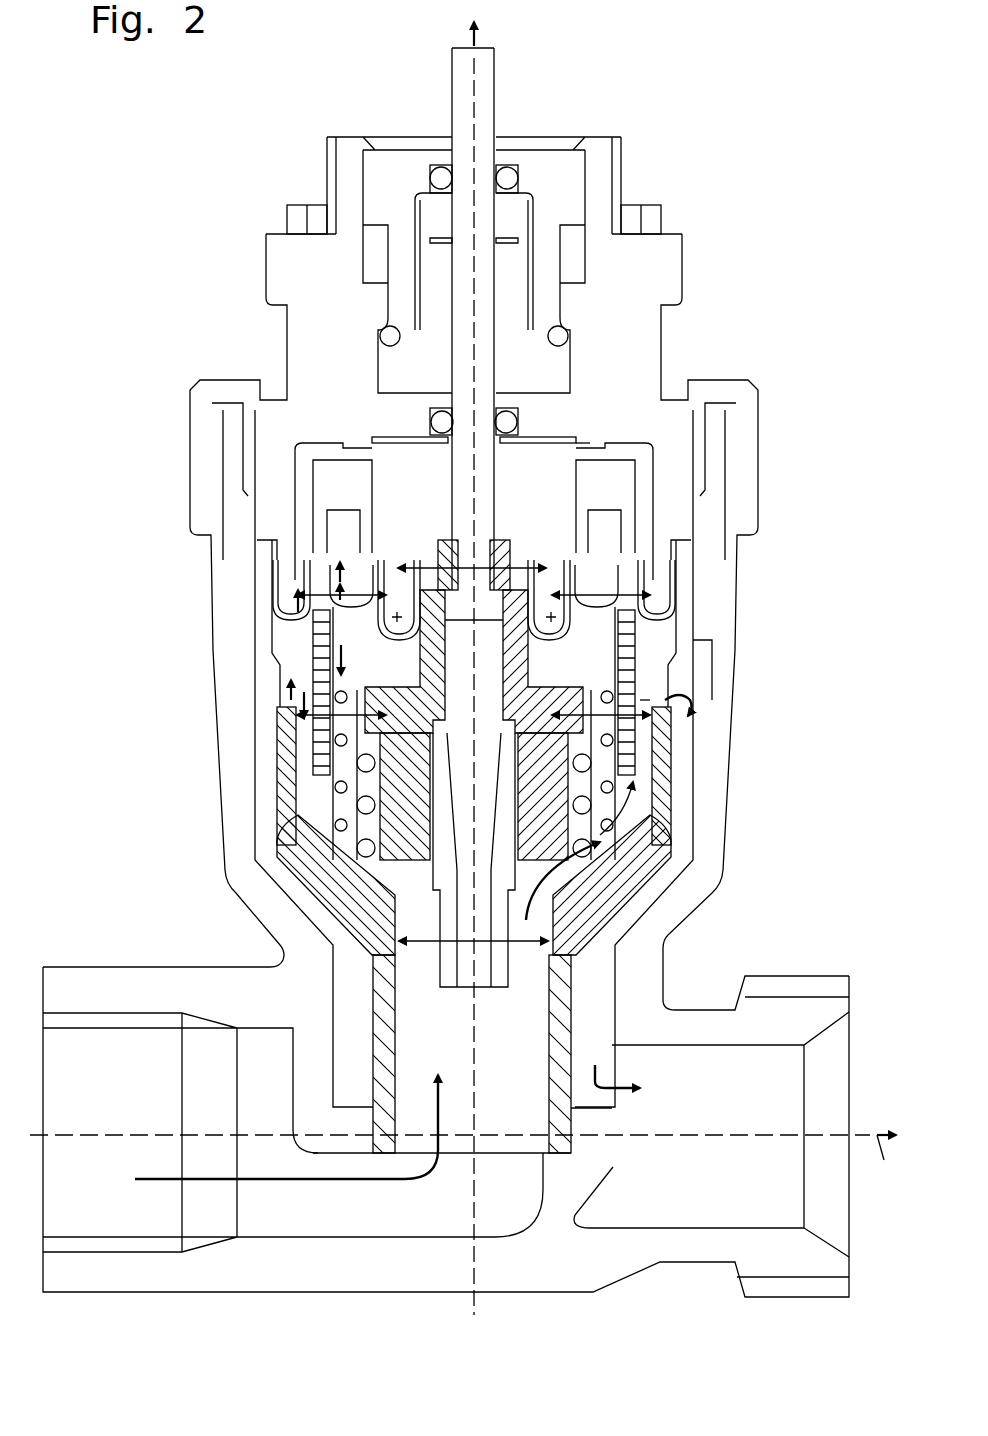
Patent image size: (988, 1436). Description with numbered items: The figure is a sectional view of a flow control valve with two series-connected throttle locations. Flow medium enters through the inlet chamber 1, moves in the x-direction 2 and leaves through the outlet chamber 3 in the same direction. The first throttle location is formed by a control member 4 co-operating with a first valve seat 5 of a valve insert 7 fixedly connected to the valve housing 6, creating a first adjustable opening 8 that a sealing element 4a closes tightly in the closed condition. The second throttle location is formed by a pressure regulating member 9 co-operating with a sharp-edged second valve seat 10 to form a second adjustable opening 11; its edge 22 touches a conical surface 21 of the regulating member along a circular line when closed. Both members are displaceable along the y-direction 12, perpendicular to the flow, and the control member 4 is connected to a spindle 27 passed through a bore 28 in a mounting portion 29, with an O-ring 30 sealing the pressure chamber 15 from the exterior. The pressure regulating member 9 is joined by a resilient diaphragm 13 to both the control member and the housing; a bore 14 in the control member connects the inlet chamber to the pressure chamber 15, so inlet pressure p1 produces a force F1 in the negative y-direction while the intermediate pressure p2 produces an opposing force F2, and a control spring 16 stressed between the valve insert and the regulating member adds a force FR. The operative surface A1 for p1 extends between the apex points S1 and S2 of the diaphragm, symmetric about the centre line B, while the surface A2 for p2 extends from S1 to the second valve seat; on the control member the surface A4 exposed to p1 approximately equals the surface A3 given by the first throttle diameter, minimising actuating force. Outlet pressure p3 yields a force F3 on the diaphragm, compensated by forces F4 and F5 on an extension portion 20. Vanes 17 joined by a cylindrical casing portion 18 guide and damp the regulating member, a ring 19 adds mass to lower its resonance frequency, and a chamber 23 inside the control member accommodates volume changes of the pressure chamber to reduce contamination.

The inlet chamber 1 is at (112, 1104).
The x-direction 2 is at (886, 1158).
The outlet chamber 3 is at (730, 1099).
The control member 4 is at (300, 792).
The sealing element 4a is at (305, 845).
The first valve seat 5 is at (300, 926).
The valve housing 6 is at (218, 647).
The valve insert 7 is at (322, 862).
The first adjustable opening 8 is at (378, 878).
The pressure regulating member 9 is at (272, 627).
The second valve seat 10 is at (283, 735).
The second adjustable opening 11 is at (273, 704).
The y-direction 12 is at (482, 36).
The resilient diaphragm 13 is at (714, 660).
The bore 14 is at (475, 953).
The pressure chamber 15 is at (420, 478).
The control spring 16 is at (585, 870).
The vanes 17 is at (612, 850).
The cylindrical casing portion 18 is at (642, 795).
The ring 19 is at (616, 488).
The extension portion 20 is at (636, 690).
The conical surface 21 is at (672, 700).
The edge 22 is at (660, 712).
The chamber 23 is at (465, 761).
The spindle 27 is at (487, 97).
The bore 28 is at (555, 440).
The mounting portion 29 is at (600, 455).
The O-ring 30 is at (505, 430).
The centre line B is at (472, 128).
The operative surface A1 is at (826, 543).
The operative surface A2 is at (826, 628).
The operative surface A3 is at (555, 945).
The operative surface A4 is at (700, 530).
The apex point S1 is at (655, 580).
The apex point S2 is at (690, 600).
The spring force FR is at (332, 566).
The force F1 is at (335, 650).
The force F2 is at (332, 584).
The force F3 is at (292, 600).
The force F4 is at (300, 722).
The force F5 is at (286, 688).
The inlet pressure p1 is at (514, 778).
The intermediate pressure p2 is at (558, 666).
The outlet pressure p3 is at (655, 639).